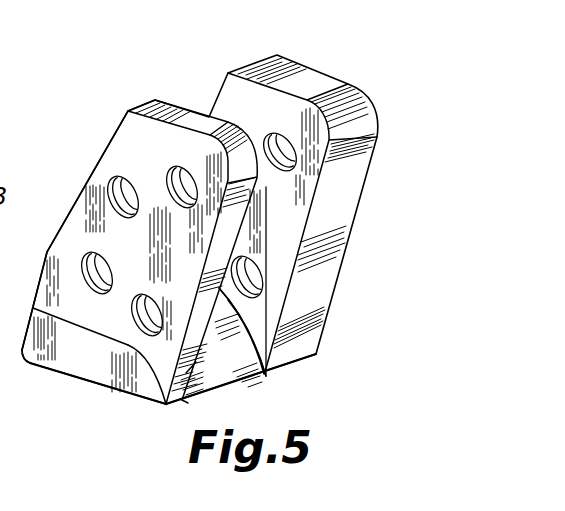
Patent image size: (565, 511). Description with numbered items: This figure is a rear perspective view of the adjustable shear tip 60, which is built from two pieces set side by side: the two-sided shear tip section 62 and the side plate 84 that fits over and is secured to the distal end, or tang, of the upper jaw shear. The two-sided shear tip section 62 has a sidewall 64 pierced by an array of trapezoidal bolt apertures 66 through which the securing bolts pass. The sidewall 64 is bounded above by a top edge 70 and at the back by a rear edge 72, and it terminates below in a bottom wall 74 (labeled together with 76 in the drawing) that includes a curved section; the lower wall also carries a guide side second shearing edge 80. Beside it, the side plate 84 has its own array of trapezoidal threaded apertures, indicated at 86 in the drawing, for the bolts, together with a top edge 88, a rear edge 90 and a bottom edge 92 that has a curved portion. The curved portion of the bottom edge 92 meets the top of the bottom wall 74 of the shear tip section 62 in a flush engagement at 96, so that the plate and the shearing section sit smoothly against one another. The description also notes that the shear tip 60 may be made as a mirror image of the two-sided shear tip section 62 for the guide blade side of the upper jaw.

The adjustable shear tip 60 is at (250, 57).
The two-sided shear tip section 62 is at (377, 113).
The sidewall 64 is at (300, 214).
The trapezoidal bolt apertures 66 is at (256, 282).
The top edge 70 is at (315, 76).
The rear edge 72 is at (327, 263).
The bottom wall 74 is at (232, 362).
The bottom edge / notch surface 76 is at (242, 332).
The guide side second shearing edge 80 is at (68, 382).
The side plate 84 is at (120, 130).
The mounting holes 86 is at (111, 192).
The top edge 88 is at (188, 117).
The rear edge 90 is at (188, 405).
The bottom edge 92 is at (53, 376).
The flush engagement 96 is at (133, 340).